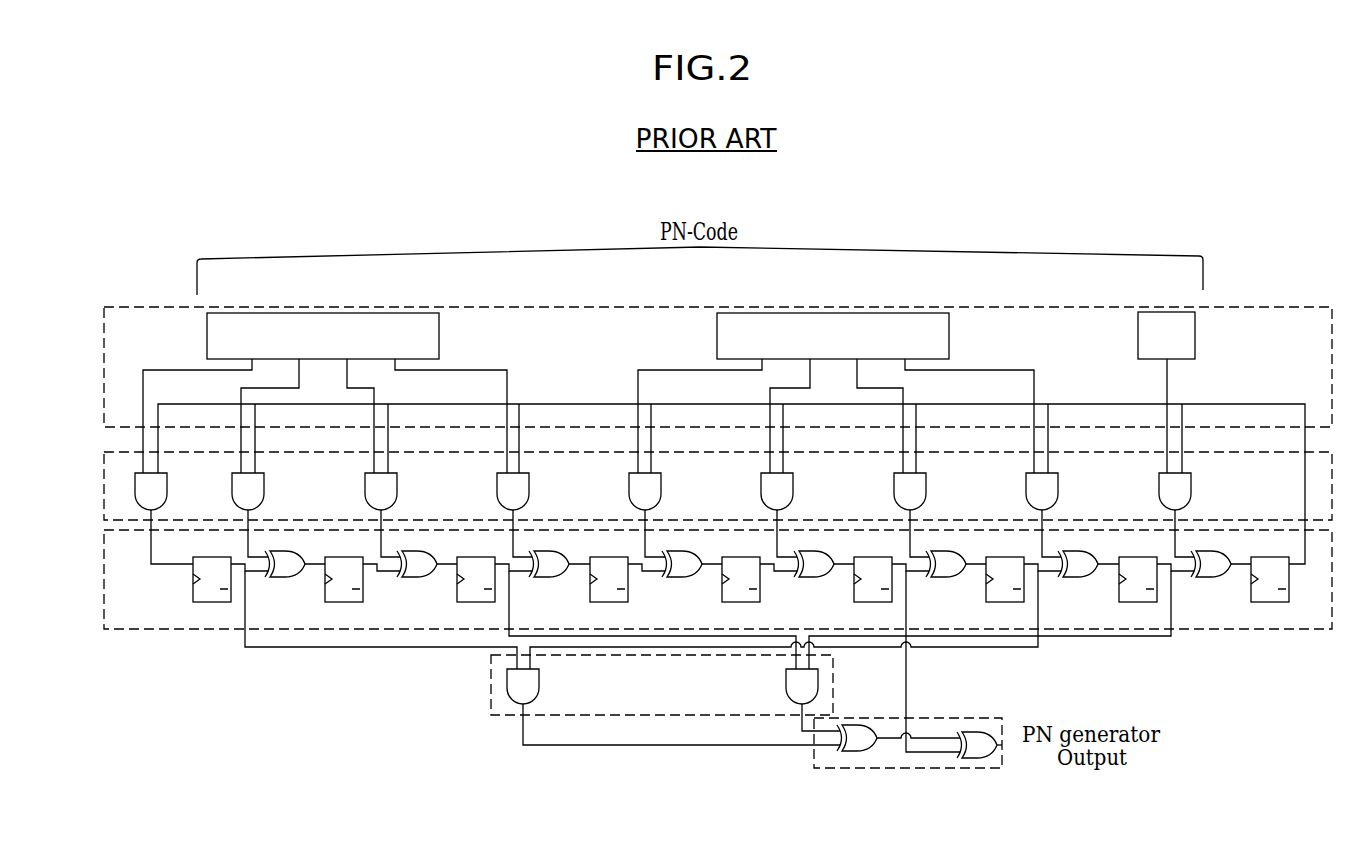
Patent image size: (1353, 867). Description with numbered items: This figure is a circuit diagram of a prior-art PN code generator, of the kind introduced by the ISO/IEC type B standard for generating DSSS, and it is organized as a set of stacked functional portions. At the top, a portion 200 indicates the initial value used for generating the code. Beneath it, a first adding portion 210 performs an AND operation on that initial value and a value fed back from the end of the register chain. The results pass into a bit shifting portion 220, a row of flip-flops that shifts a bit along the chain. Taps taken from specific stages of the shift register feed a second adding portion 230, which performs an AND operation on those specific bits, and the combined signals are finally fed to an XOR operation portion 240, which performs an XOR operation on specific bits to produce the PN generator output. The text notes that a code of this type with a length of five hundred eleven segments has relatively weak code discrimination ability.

The portion indicating an initial value 200 is at (104, 358).
The first adding portion 210 is at (104, 478).
The bit shifting portion 220 is at (104, 562).
The second adding portion 230 is at (491, 686).
The XOR operation portion 240 is at (1003, 718).